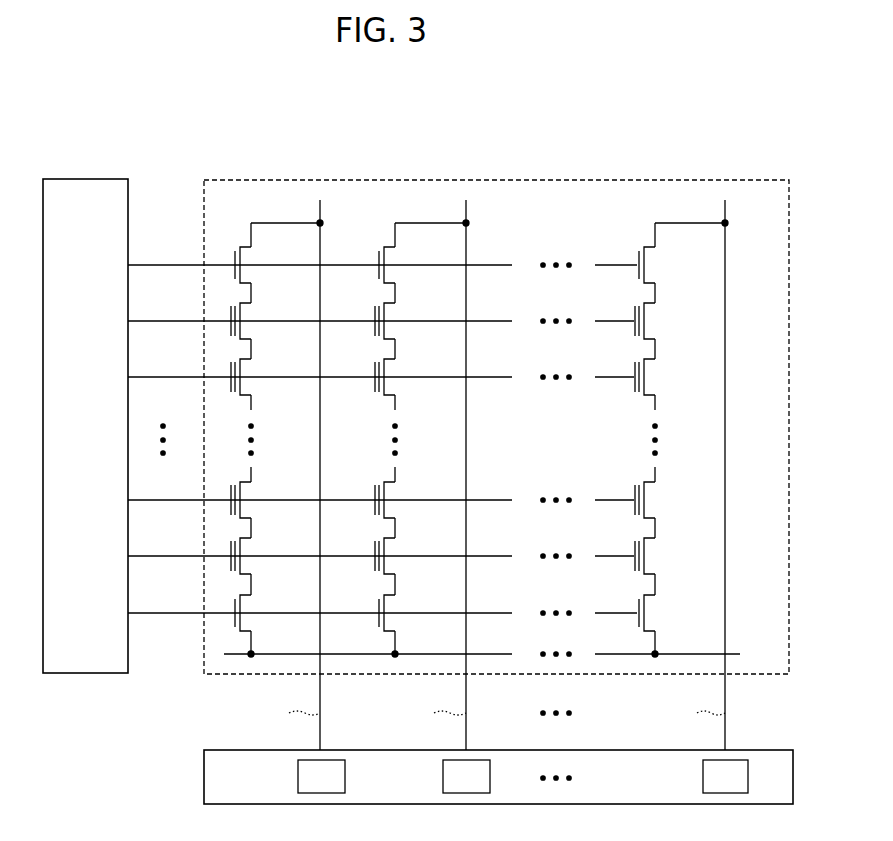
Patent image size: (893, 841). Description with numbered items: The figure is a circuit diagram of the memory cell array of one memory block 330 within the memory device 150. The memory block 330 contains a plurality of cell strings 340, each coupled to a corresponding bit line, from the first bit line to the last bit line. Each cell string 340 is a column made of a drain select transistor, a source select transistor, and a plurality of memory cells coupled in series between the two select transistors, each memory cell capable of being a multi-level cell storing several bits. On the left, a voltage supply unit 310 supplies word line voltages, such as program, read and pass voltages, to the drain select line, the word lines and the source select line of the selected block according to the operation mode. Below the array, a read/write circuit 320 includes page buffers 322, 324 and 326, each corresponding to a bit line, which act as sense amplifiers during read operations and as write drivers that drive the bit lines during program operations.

The memory device 150 is at (768, 95).
The voltage supply unit 310 is at (87, 178).
The memory block 330 is at (693, 178).
The cell string 340 is at (237, 231).
The read/write circuit 320 is at (204, 778).
The page buffer 322 is at (298, 778).
The page buffer 324 is at (443, 778).
The page buffer 326 is at (703, 778).